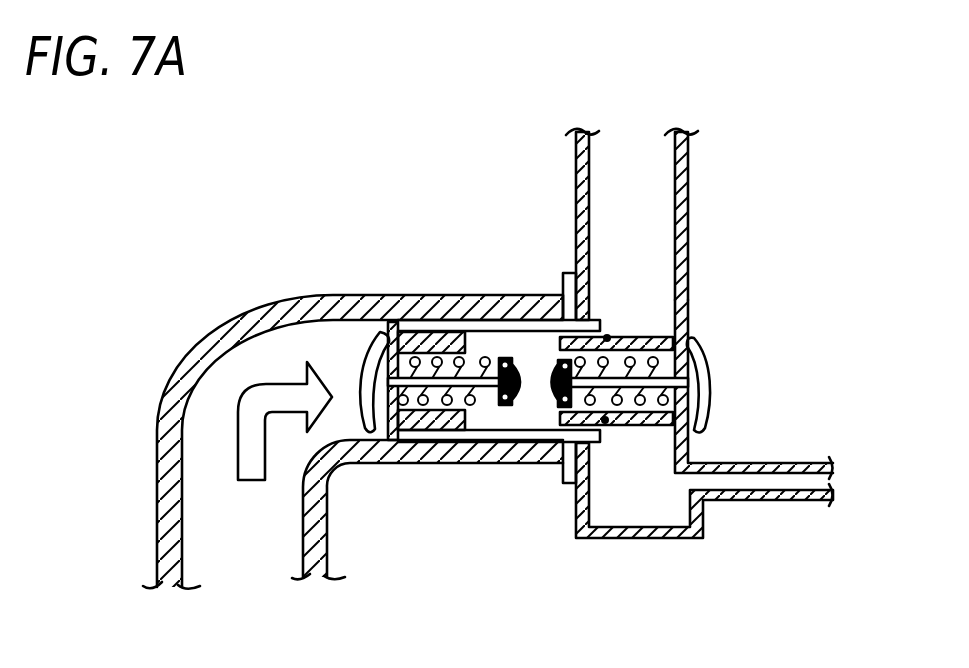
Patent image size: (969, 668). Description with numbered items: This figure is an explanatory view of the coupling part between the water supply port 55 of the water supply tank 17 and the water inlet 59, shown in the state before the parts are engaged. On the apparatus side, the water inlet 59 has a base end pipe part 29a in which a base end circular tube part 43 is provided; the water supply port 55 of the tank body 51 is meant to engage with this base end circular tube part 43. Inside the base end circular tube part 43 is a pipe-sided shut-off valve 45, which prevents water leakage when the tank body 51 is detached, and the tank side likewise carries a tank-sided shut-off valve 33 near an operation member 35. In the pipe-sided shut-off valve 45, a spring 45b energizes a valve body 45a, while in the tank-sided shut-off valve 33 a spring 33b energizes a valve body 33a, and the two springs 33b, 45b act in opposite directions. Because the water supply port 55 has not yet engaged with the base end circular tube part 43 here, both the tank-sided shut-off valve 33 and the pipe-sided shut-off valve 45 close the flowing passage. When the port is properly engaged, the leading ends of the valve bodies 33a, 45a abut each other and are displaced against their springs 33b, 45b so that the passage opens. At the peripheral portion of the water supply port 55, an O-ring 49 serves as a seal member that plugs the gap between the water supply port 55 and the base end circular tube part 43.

The water supply tank 17 is at (675, 183).
The base end pipe part 29a is at (327, 505).
The tank-sided shut-off valve 33 is at (718, 394).
The valve body 33a is at (710, 422).
The spring 33b is at (612, 422).
The operation member 35 is at (577, 207).
The base end circular tube part 43 is at (562, 290).
The pipe-sided shut-off valve 45 is at (383, 375).
The valve body 45a is at (365, 436).
The spring 45b is at (369, 377).
The O-ring 49 is at (607, 337).
The tank body 51 is at (688, 301).
The water supply port 55 is at (623, 425).
The water inlet 59 is at (357, 263).